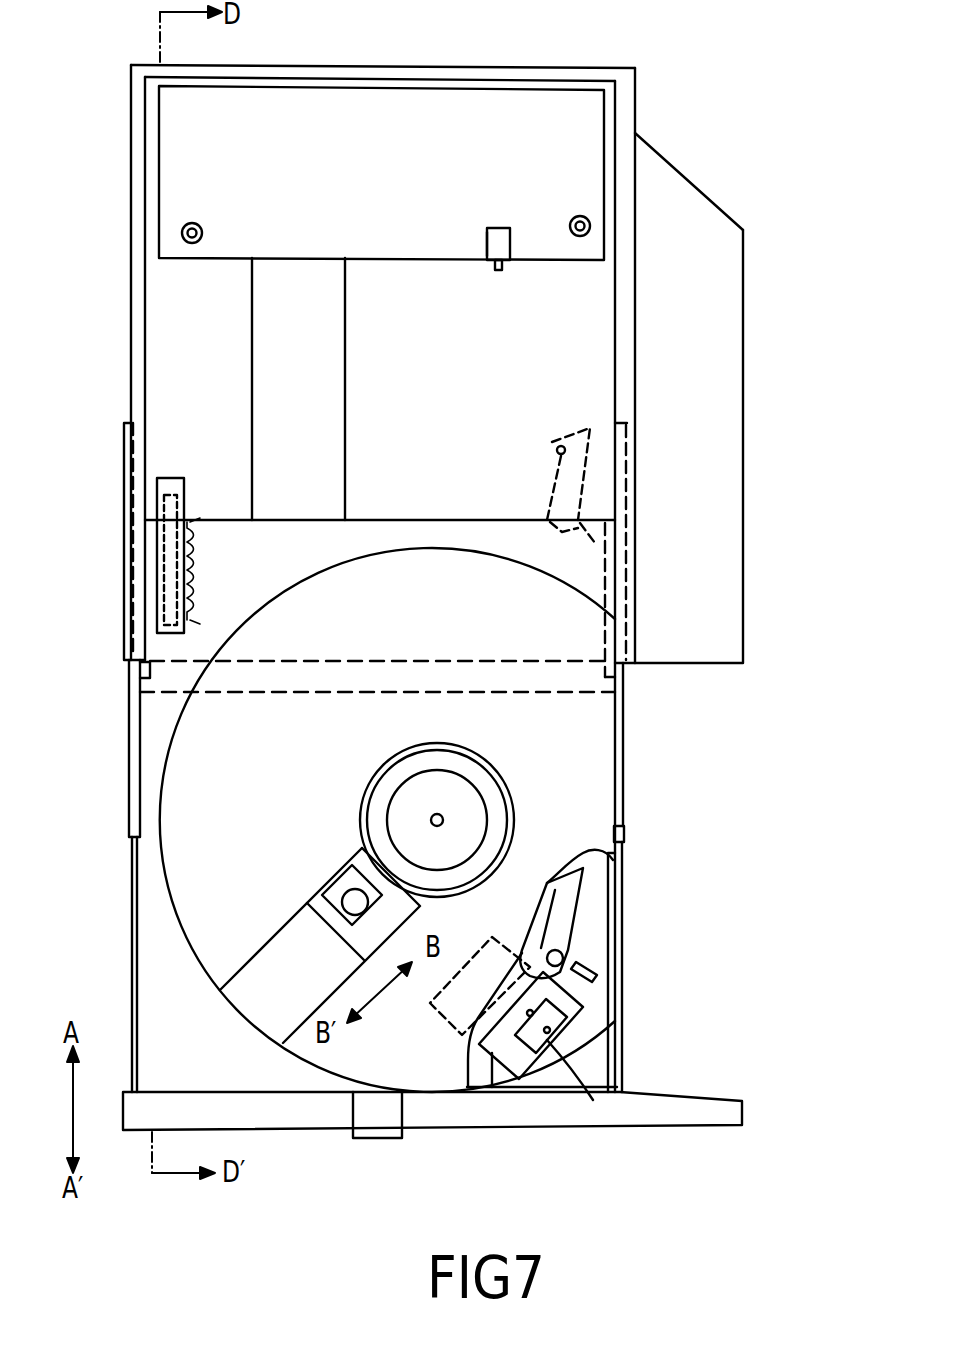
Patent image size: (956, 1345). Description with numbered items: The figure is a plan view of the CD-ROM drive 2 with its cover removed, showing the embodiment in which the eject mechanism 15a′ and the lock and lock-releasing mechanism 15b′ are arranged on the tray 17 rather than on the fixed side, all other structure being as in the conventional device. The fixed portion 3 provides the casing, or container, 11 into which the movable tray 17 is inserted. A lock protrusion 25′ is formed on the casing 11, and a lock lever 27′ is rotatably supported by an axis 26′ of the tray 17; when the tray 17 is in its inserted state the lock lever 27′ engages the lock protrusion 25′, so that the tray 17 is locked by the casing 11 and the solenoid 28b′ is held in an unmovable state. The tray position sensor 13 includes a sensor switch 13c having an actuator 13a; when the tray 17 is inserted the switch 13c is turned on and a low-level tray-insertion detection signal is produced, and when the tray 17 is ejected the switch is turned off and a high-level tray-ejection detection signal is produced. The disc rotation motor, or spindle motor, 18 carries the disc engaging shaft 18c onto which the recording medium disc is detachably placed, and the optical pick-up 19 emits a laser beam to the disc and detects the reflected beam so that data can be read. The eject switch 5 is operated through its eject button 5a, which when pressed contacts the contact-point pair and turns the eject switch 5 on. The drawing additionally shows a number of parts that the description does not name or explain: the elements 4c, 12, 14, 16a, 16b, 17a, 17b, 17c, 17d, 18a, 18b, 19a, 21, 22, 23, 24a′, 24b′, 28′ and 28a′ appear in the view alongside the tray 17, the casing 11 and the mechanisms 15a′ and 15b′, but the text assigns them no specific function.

The CD-ROM drive 2 is at (748, 158).
The fixed portion 3 is at (750, 348).
The partition line 4c is at (615, 692).
The eject switch 5 is at (383, 1145).
The eject button 5a is at (402, 1138).
The casing 11 is at (371, 68).
The top panel 12 is at (440, 100).
The tray position sensor 13 is at (505, 218).
The actuator 13a is at (505, 268).
The sensor switch 13c is at (487, 230).
The guide bracket 14 is at (131, 388).
The eject mechanism 15a′ is at (145, 580).
The lock and lock-releasing mechanism 15b′ is at (600, 1003).
The screw 16a is at (591, 222).
The screw 16b is at (182, 230).
The tray 17 is at (618, 855).
The side frame portion 17a is at (160, 793).
The side frame lower portion 17b is at (133, 985).
The side frame upper portion 17c is at (129, 745).
The shelf 17d is at (211, 520).
The disc rotation motor 18 is at (522, 779).
The hub center shaft 18a is at (443, 817).
The pivot 18b is at (617, 830).
The disc engaging shaft 18c is at (463, 847).
The optical pick-up 19 is at (318, 938).
The arm edge 19a is at (327, 884).
The pivot shaft 21 is at (428, 898).
The bottom frame 22 is at (511, 1122).
The support column 23 is at (347, 388).
The spring 24a′ is at (200, 575).
The spring holder 24b′ is at (165, 490).
The lock protrusion 25′ is at (557, 450).
The axis 26′ is at (590, 937).
The lock lever 27′ is at (590, 487).
The slide block 28′ is at (548, 1068).
The slide tab 28a′ is at (590, 970).
The solenoid 28b′ is at (590, 1095).